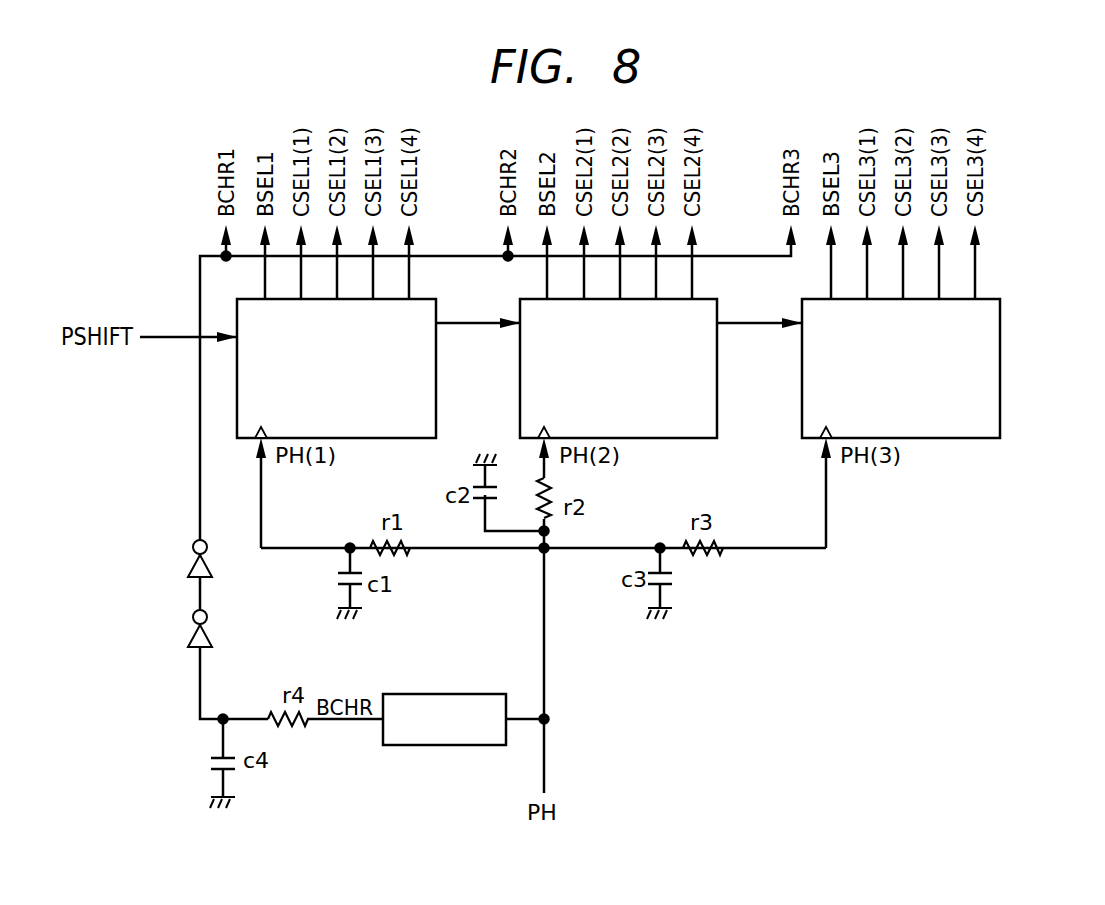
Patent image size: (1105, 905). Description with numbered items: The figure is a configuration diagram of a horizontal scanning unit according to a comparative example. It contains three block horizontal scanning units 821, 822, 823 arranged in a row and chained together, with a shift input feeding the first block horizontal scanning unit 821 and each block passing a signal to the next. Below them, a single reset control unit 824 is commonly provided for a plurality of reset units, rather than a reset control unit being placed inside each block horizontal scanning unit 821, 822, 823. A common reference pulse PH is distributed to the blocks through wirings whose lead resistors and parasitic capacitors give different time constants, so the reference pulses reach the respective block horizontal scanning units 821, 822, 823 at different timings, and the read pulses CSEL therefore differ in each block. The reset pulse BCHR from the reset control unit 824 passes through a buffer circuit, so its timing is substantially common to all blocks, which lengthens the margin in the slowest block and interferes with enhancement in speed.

The block horizontal scanning unit 821 is at (436, 388).
The block horizontal scanning unit 822 is at (717, 388).
The block horizontal scanning unit 823 is at (1000, 388).
The reset control unit 824 is at (443, 694).